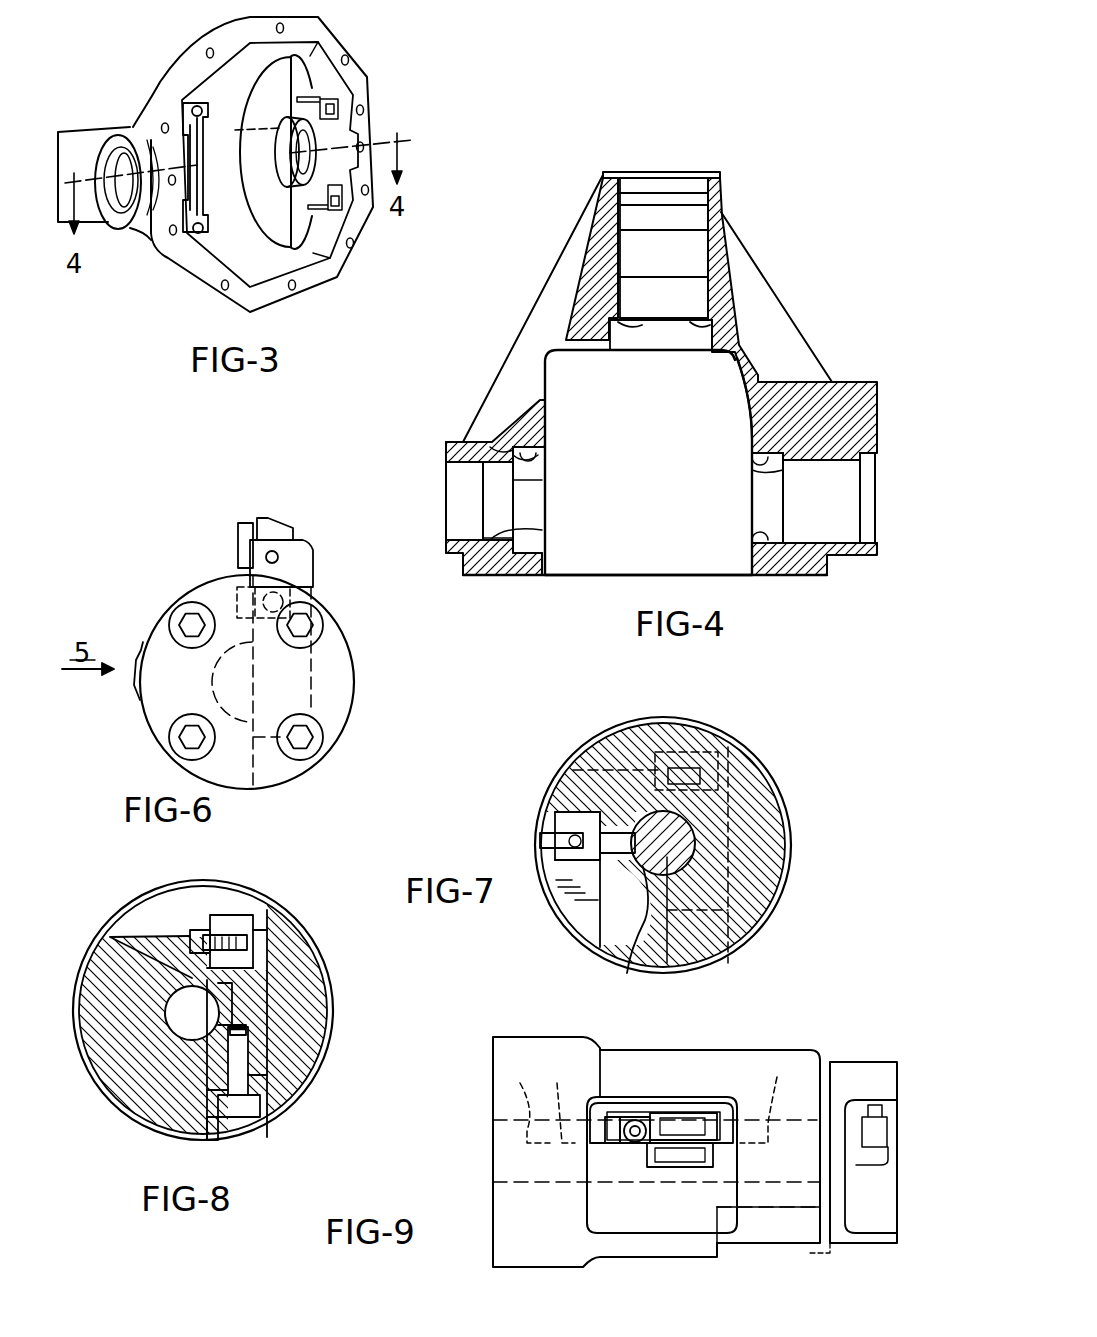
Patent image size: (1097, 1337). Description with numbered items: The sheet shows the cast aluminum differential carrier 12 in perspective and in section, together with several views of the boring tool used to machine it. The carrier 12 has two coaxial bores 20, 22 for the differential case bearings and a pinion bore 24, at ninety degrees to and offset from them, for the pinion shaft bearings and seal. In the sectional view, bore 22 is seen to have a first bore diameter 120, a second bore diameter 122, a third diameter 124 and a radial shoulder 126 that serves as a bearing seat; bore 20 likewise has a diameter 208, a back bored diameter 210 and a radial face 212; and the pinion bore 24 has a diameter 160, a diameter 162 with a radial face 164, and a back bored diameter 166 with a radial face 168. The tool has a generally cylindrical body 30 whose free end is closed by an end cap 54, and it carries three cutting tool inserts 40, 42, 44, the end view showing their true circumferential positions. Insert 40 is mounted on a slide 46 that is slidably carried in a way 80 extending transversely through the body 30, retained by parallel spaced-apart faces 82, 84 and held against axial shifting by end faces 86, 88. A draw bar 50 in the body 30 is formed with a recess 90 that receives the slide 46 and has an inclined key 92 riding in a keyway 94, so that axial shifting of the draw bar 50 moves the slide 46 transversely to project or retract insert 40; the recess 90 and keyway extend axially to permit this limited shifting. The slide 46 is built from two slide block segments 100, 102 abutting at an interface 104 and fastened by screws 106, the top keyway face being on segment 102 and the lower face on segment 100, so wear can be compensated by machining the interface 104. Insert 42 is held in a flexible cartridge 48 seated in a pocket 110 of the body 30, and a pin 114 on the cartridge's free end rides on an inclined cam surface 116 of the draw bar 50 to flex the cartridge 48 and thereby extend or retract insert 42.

In FIG. 3, the differential carrier 12 is at (357, 74).
In FIG. 4, the differential carrier 12 is at (542, 292).
In FIG. 3, the bore 20 is at (290, 178).
In FIG. 4, the bore 20 is at (750, 534).
In FIG. 3, the bore 22 is at (116, 224).
In FIG. 4, the bore 22 is at (448, 506).
In FIG. 3, the bore 24 is at (207, 103).
In FIG. 4, the bore 24 is at (650, 343).
In FIG. 8, the cylindrical body 30 is at (312, 1017).
In FIG. 9, the cylindrical body 30 is at (643, 1055).
In FIG. 6, the cutting tool insert 40 is at (313, 585).
In FIG. 8, the cutting tool insert 40 is at (218, 918).
In FIG. 9, the cutting tool insert 40 is at (700, 1110).
In FIG. 6, the cutting tool insert 42 is at (123, 680).
In FIG. 6, the cutting tool insert 44 is at (260, 518).
In FIG. 9, the cutting tool insert 44 is at (877, 1113).
In FIG. 8, the slide 46 is at (258, 978).
In FIG. 7, the flexible cartridge 48 is at (555, 837).
In FIG. 7, the draw bar 50 is at (690, 820).
In FIG. 9, the draw bar 50 is at (498, 1160).
In FIG. 6, the end cap 54 is at (343, 661).
In FIG. 8, the way 80 is at (253, 1118).
In FIG. 8, the face 82 is at (260, 1030).
In FIG. 9, the face 82 is at (640, 1097).
In FIG. 8, the face 84 is at (207, 1137).
In FIG. 9, the face 84 is at (608, 1147).
In FIG. 9, the end face 86 is at (598, 1053).
In FIG. 9, the end face 88 is at (698, 1117).
In FIG. 8, the recess 90 is at (187, 1033).
In FIG. 9, the recess 90 is at (645, 1099).
In FIG. 8, the key 92 is at (170, 993).
In FIG. 9, the key 92 is at (559, 1102).
In FIG. 8, the keyway 94 is at (235, 997).
In FIG. 8, the slide block segment 100 is at (207, 1087).
In FIG. 8, the slide block segment 102 is at (257, 968).
In FIG. 8, the interface 104 is at (257, 1077).
In FIG. 8, the screws 106 is at (238, 1112).
In FIG. 7, the pocket 110 is at (567, 907).
In FIG. 9, the pocket 110 is at (750, 1230).
In FIG. 7, the pin 114 is at (617, 840).
In FIG. 7, the inclined cam surface 116 is at (646, 935).
In FIG. 4, the bore diameter 120 is at (447, 459).
In FIG. 4, the bore diameter 122 is at (535, 530).
In FIG. 4, the bore diameter 124 is at (535, 455).
In FIG. 4, the radial shoulder 126 is at (543, 481).
In FIG. 4, the diameter 160 is at (608, 180).
In FIG. 4, the diameter 162 is at (612, 203).
In FIG. 4, the radial face 164 is at (615, 222).
In FIG. 4, the diameter 166 is at (616, 345).
In FIG. 4, the radial face 168 is at (700, 323).
In FIG. 4, the diameter 208 is at (877, 546).
In FIG. 4, the diameter 210 is at (748, 455).
In FIG. 4, the radial face 212 is at (751, 472).